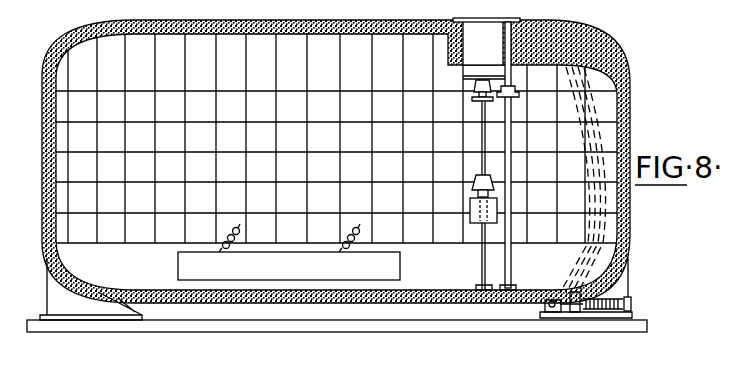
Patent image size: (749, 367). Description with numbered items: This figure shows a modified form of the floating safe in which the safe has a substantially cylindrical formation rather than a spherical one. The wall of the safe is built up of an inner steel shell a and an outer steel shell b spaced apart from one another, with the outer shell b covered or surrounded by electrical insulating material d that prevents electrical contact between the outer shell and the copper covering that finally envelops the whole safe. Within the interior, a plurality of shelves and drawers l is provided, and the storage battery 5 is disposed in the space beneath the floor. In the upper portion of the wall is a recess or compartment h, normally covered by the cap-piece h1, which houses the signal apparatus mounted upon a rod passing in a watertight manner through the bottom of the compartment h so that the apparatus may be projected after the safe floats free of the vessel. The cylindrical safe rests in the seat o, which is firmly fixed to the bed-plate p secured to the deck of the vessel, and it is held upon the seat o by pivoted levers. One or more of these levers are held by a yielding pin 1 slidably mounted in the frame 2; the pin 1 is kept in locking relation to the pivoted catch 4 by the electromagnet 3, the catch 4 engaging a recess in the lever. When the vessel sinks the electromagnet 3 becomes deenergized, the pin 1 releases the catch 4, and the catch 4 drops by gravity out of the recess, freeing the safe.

The inner steel shell a is at (318, 36).
The outer steel shell b is at (222, 19).
The electrical insulating material d is at (290, 19).
The shelves and drawers l is at (336, 138).
The recess or compartment h is at (484, 49).
The cap-piece h1 is at (489, 20).
The seat o is at (636, 272).
The bed-plate p is at (204, 331).
The storage battery 5 is at (358, 273).
The yielding pin 1 is at (631, 304).
The frame 2 is at (605, 310).
The electromagnet 3 is at (588, 310).
The pivoted catch 4 is at (566, 296).